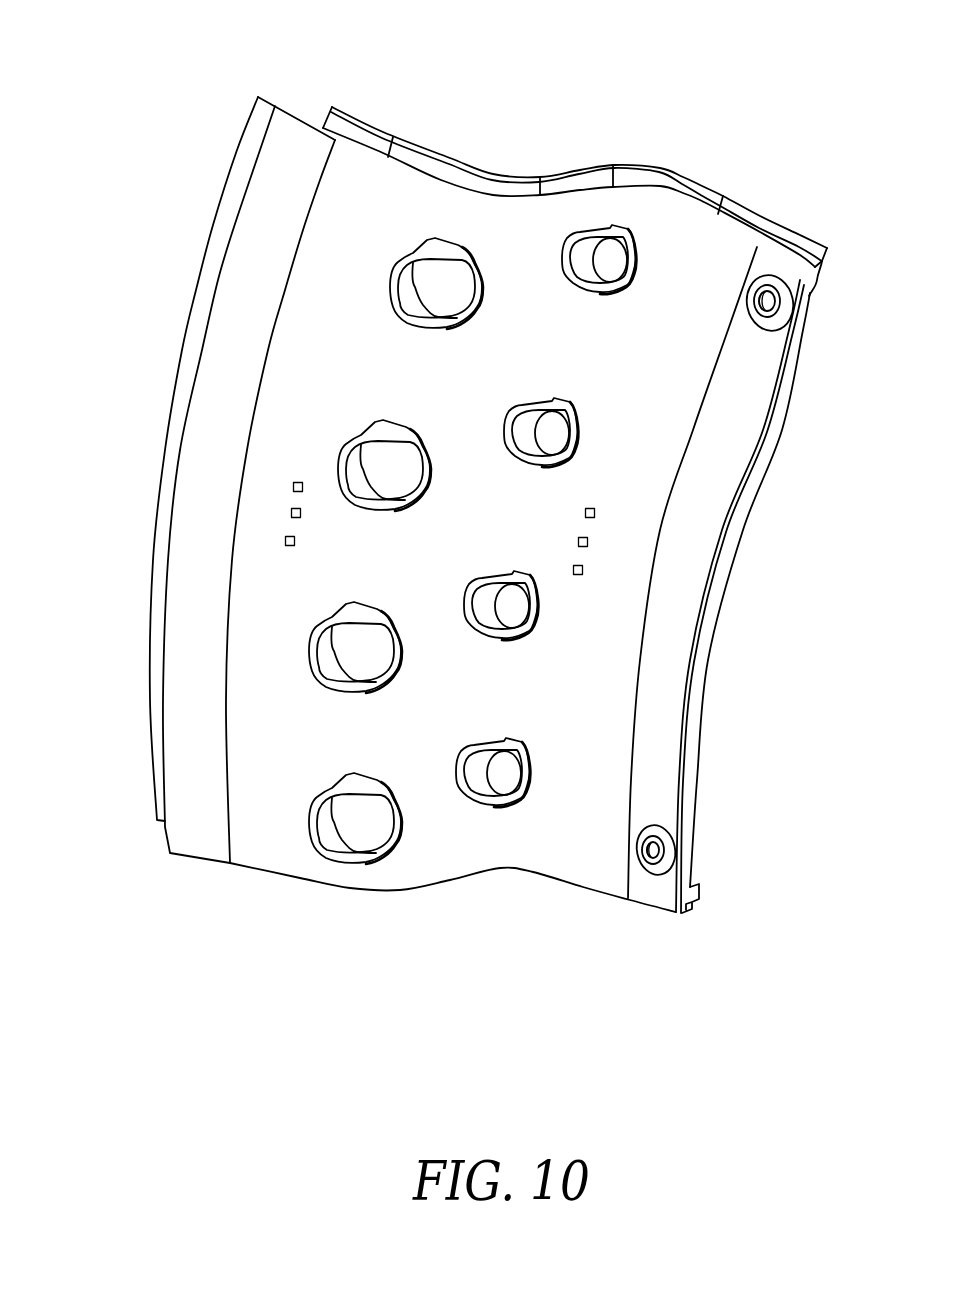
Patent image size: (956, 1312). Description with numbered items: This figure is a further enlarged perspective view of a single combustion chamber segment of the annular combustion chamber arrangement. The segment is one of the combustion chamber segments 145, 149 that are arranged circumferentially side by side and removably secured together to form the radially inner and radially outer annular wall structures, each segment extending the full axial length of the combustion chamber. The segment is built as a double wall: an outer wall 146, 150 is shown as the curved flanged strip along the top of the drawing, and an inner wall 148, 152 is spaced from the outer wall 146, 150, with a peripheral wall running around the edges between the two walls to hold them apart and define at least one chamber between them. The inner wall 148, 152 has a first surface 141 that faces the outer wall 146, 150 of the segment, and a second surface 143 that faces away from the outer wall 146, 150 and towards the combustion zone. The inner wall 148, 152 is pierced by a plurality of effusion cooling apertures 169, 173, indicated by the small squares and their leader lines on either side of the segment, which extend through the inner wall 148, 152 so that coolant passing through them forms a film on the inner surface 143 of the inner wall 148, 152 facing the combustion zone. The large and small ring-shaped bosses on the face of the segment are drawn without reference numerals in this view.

The first surface 141 is at (667, 295).
The second surface 143 is at (575, 150).
The combustion chamber segment 145 is at (244, 444).
The combustion chamber segment 149 is at (305, 138).
The outer wall 146 is at (579, 147).
The outer wall 150 is at (597, 178).
The inner wall 148 is at (472, 481).
The inner wall 152 is at (495, 232).
The effusion cooling apertures 169 is at (434, 565).
The effusion cooling apertures 173 is at (293, 487).